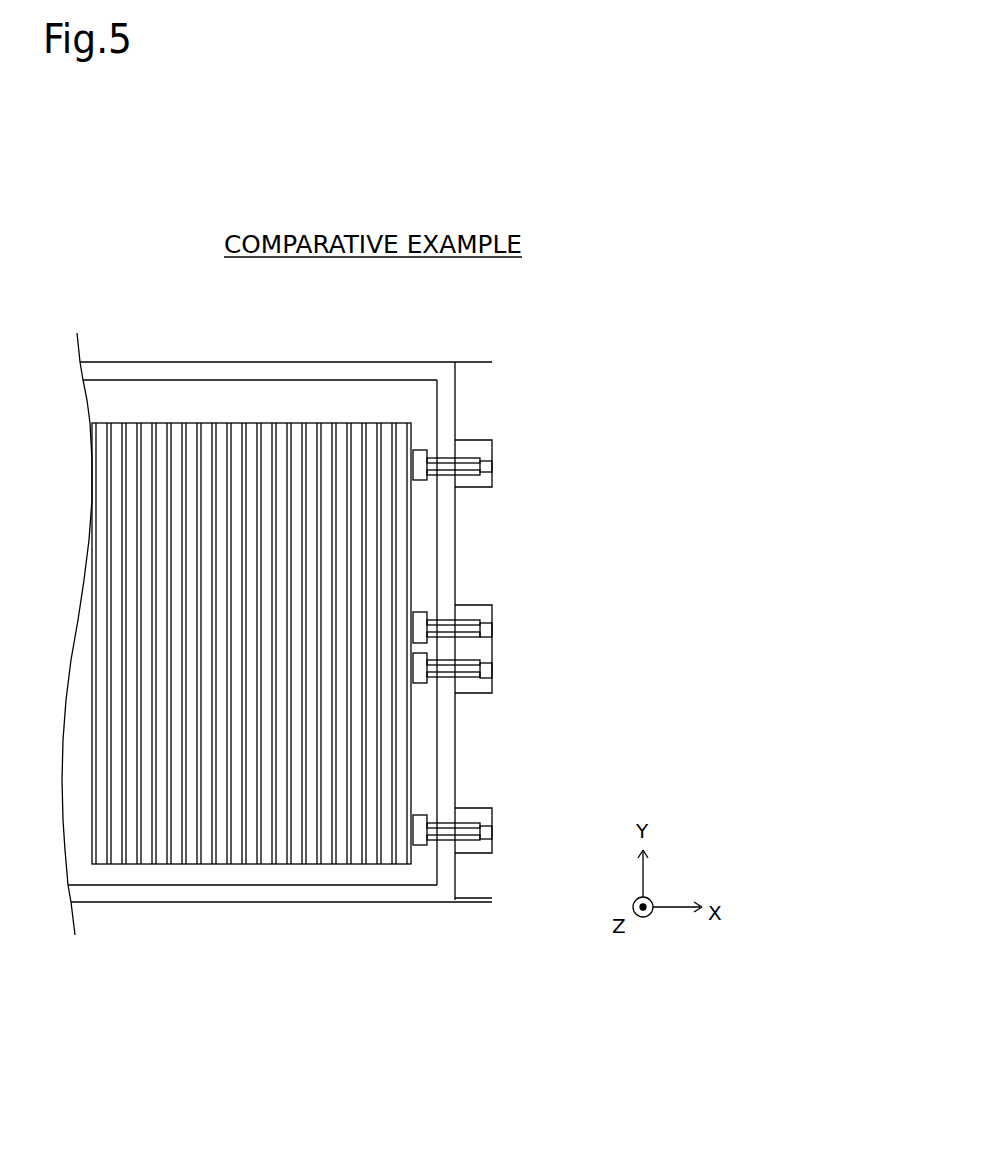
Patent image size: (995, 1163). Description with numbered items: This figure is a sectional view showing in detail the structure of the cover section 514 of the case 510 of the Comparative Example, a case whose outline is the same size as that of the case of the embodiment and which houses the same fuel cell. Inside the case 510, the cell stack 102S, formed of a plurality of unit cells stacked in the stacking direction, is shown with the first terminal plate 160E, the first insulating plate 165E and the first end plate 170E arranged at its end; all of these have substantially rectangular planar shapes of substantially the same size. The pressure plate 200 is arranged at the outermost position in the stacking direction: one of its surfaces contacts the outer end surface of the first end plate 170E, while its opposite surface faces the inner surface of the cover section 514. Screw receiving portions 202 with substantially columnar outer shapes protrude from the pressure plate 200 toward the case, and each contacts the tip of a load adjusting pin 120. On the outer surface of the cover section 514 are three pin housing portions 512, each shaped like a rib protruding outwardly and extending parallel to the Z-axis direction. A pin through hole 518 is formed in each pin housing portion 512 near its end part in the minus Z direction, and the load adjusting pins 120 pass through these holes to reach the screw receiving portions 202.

The case 510 is at (138, 362).
The cover section 514 is at (470, 364).
The pressure plate 200 is at (447, 390).
The screw receiving portion 202 is at (422, 451).
The pin housing portion 512 is at (470, 446).
The pin through hole 518 is at (493, 458).
The load adjusting pin 120 is at (480, 477).
The first terminal plate 160E is at (350, 425).
The first insulating plate 165E is at (365, 425).
The first end plate 170E is at (383, 425).
The cell stack 102S is at (215, 871).